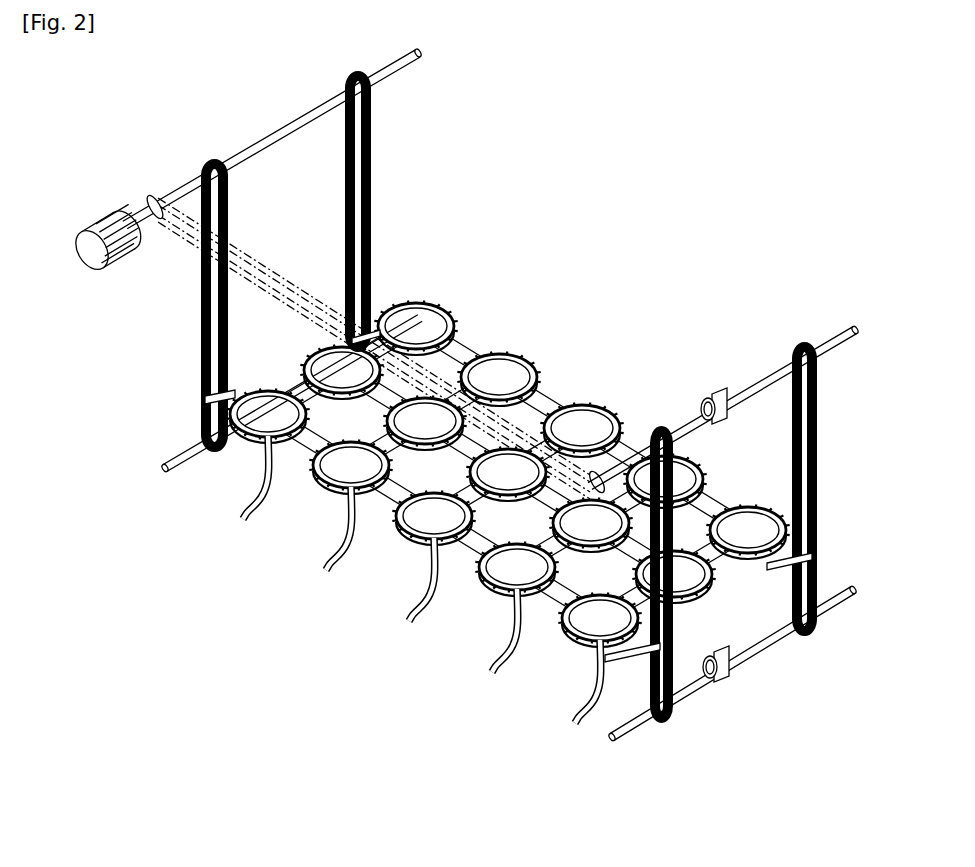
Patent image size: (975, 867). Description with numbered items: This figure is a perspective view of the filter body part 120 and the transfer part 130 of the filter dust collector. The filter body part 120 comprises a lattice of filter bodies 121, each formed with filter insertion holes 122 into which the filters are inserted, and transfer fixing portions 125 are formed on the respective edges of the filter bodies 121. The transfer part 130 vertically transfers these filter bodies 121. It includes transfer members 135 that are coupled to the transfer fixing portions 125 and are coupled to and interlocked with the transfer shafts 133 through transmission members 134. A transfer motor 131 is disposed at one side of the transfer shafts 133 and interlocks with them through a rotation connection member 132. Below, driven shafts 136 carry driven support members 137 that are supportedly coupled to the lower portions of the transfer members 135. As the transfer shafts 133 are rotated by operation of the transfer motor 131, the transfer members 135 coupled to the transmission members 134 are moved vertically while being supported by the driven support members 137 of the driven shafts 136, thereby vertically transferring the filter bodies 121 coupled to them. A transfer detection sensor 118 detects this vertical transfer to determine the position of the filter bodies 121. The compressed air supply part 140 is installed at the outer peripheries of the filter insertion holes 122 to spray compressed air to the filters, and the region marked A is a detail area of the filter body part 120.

The transfer detection sensor 118 is at (706, 400).
The filter body part 120 is at (625, 662).
The filter bodies 121 is at (493, 605).
The filter insertion holes 122 is at (592, 428).
The transfer fixing portions 125 is at (773, 572).
The transfer part 130 is at (103, 251).
The transfer motor 131 is at (108, 222).
The rotation connection member 132 is at (178, 240).
The transfer shafts 133 is at (258, 147).
The transmission members 134 is at (203, 165).
The transfer members 135 is at (233, 208).
The driven shafts 136 is at (186, 468).
The driven support members 137 is at (205, 412).
The compressed air supply part 140 is at (404, 547).
The detail region A is at (576, 648).